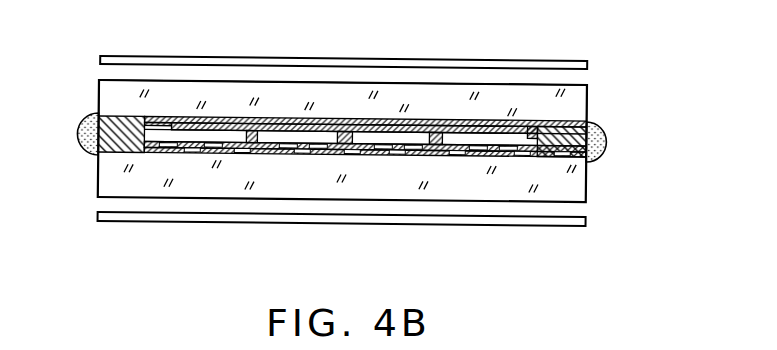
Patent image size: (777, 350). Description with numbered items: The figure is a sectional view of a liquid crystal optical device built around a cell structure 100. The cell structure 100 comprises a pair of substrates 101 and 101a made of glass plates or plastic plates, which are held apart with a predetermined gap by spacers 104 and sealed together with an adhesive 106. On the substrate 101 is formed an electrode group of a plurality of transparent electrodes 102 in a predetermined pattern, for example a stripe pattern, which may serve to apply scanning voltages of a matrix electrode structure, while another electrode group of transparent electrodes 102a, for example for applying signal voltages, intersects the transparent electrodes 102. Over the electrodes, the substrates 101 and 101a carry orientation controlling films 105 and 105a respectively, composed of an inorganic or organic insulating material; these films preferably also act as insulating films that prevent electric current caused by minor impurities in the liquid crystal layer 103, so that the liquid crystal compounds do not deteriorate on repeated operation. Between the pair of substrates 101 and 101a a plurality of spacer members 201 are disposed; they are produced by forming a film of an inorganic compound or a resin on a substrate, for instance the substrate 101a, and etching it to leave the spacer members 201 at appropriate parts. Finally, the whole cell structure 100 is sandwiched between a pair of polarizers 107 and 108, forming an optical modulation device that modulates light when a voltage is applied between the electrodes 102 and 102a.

The cell structure 100 is at (636, 141).
The substrate 101 is at (108, 173).
The substrate 101a is at (108, 92).
The transparent electrodes 102 is at (370, 153).
The transparent electrodes 102a is at (398, 120).
The liquid crystal layer 103 is at (200, 118).
The spacers 104 is at (113, 135).
The orientation controlling film 105 is at (530, 153).
The orientation controlling film 105a is at (530, 128).
The adhesive 106 is at (85, 115).
The polarizer 107 is at (587, 222).
The polarizer 108 is at (588, 65).
The spacer members 201 is at (273, 128).